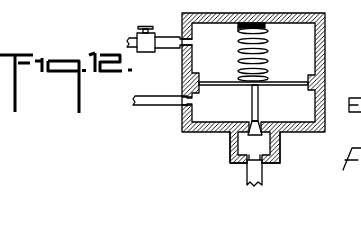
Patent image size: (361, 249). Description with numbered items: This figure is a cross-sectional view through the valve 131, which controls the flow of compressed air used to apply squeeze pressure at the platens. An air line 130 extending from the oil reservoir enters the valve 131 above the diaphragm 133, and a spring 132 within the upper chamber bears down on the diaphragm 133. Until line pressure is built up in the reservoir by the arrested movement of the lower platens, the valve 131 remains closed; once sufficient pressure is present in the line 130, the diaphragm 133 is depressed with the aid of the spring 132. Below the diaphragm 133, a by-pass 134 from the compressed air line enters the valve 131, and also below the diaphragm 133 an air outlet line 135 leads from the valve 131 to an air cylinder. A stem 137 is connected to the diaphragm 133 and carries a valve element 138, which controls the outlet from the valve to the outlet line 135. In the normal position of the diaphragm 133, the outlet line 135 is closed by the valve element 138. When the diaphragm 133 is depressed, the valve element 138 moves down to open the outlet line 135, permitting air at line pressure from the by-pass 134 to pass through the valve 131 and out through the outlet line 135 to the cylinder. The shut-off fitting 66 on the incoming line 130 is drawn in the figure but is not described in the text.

The valve 66 is at (136, 26).
The air line 130 is at (163, 37).
The valve 131 is at (325, 50).
The spring 132 is at (266, 35).
The diaphragm 133 is at (292, 81).
The by-pass 134 is at (153, 104).
The air outlet line 135 is at (262, 175).
The stem 137 is at (258, 102).
The valve element 138 is at (233, 142).